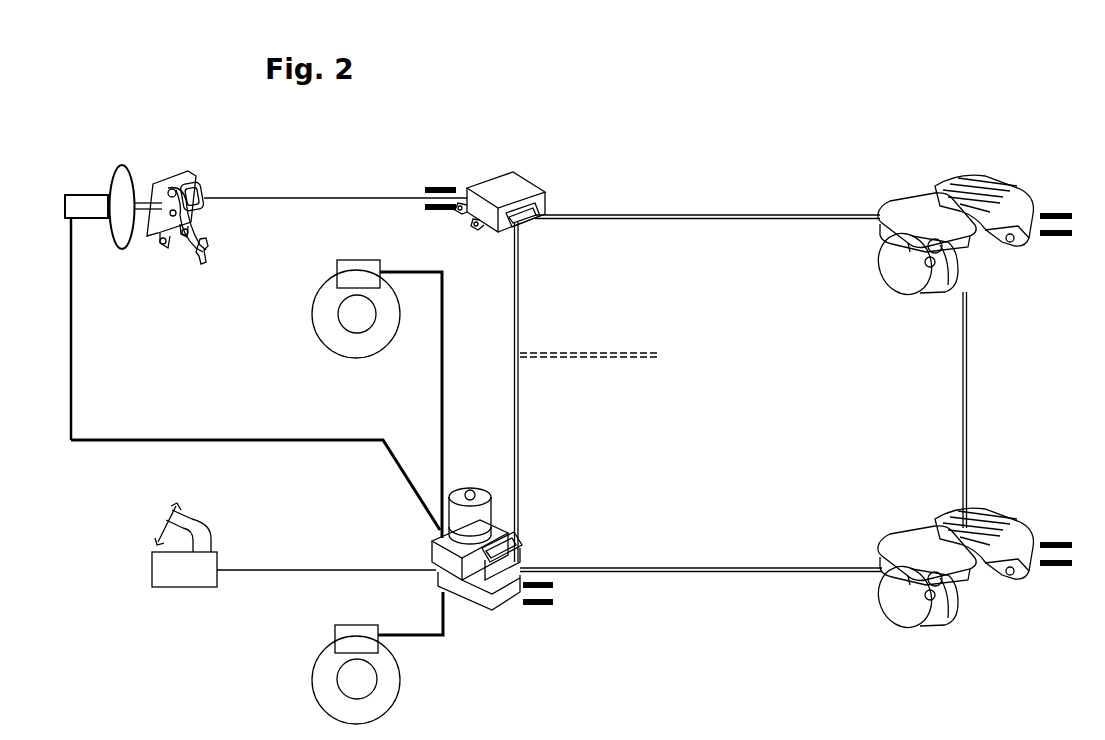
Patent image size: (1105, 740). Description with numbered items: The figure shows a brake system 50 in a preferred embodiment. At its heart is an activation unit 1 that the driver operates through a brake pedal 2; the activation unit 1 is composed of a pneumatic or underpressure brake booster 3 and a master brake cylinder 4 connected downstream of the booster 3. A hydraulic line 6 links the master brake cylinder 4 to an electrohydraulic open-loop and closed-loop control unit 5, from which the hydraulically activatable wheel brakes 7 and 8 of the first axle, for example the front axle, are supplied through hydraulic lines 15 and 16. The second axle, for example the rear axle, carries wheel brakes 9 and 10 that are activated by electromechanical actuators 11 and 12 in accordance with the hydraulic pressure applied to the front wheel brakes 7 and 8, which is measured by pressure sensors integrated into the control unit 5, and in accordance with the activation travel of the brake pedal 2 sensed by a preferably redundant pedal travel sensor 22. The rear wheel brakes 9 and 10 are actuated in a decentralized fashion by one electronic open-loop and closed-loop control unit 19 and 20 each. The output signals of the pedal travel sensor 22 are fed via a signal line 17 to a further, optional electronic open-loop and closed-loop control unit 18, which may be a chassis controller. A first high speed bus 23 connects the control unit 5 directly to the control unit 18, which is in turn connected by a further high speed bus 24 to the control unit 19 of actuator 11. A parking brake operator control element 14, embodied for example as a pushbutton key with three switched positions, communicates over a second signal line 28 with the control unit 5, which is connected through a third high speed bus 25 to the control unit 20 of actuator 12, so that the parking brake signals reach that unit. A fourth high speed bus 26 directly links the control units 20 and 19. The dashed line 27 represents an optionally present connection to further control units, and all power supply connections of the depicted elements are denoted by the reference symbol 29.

The activation unit 1 is at (150, 165).
The brake pedal 2 is at (192, 256).
The underpressure brake booster 3 is at (125, 166).
The master brake cylinder 4 is at (85, 195).
The electrohydraulic open-loop and closed-loop control unit 5 is at (474, 488).
The hydraulic line 6 is at (217, 439).
The wheel brake 7 is at (334, 271).
The wheel brake 8 is at (335, 638).
The wheel brake 9 is at (1001, 194).
The wheel brake 10 is at (984, 518).
The electromechanical actuator 11 is at (891, 274).
The electromechanical actuator 12 is at (906, 612).
The operator control element 14 is at (193, 528).
The hydraulic line 15 is at (440, 393).
The hydraulic line 16 is at (426, 640).
The signal line 17 is at (312, 196).
The electronic open-loop and closed-loop control unit 18 is at (540, 186).
The electronic open-loop and closed-loop control unit 19 is at (897, 200).
The electronic open-loop and closed-loop control unit 20 is at (927, 521).
The pedal travel sensor 22 is at (201, 187).
The first high speed bus 23 is at (520, 313).
The further high speed bus 24 is at (727, 214).
The third high speed bus 25 is at (712, 566).
The fourth high speed bus 26 is at (969, 360).
The line 27 is at (635, 350).
The second signal line 28 is at (338, 569).
The power supply connections 29 is at (424, 184).
The brake system 50 is at (815, 88).